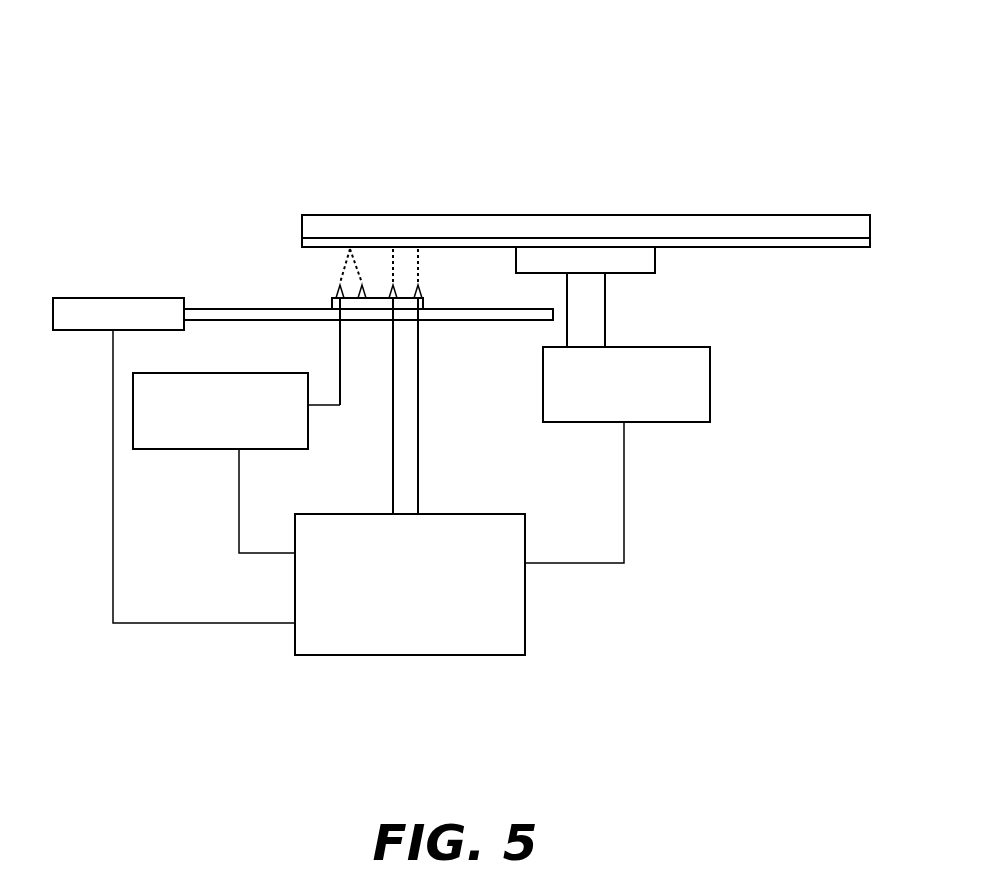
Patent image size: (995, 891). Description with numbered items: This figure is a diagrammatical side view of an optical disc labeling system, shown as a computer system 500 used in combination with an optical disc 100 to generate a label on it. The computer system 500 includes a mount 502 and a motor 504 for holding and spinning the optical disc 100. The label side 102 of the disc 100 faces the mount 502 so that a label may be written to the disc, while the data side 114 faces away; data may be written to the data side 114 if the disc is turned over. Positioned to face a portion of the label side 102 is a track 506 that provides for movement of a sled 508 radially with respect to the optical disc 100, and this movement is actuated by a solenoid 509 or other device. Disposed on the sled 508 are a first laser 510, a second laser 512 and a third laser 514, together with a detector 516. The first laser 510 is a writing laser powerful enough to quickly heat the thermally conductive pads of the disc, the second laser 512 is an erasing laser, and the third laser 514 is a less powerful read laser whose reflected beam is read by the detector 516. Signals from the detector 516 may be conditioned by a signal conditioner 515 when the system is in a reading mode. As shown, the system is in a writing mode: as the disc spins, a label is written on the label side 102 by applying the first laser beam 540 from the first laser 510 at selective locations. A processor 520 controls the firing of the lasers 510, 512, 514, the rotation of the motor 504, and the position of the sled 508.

The computer system 500 is at (427, 90).
The optical disc 100 is at (785, 226).
The data side 114 is at (606, 186).
The label side 102 is at (727, 265).
The mount 502 is at (642, 274).
The motor 504 is at (672, 423).
The solenoid 509 is at (90, 298).
The track 506 is at (205, 309).
The sled 508 is at (330, 308).
The detector 516 is at (333, 298).
The third laser 514 is at (362, 285).
The second laser 512 is at (394, 285).
The first laser 510 is at (422, 298).
The first laser beam 540 is at (420, 265).
The signal conditioner 515 is at (283, 450).
The processor 520 is at (410, 584).